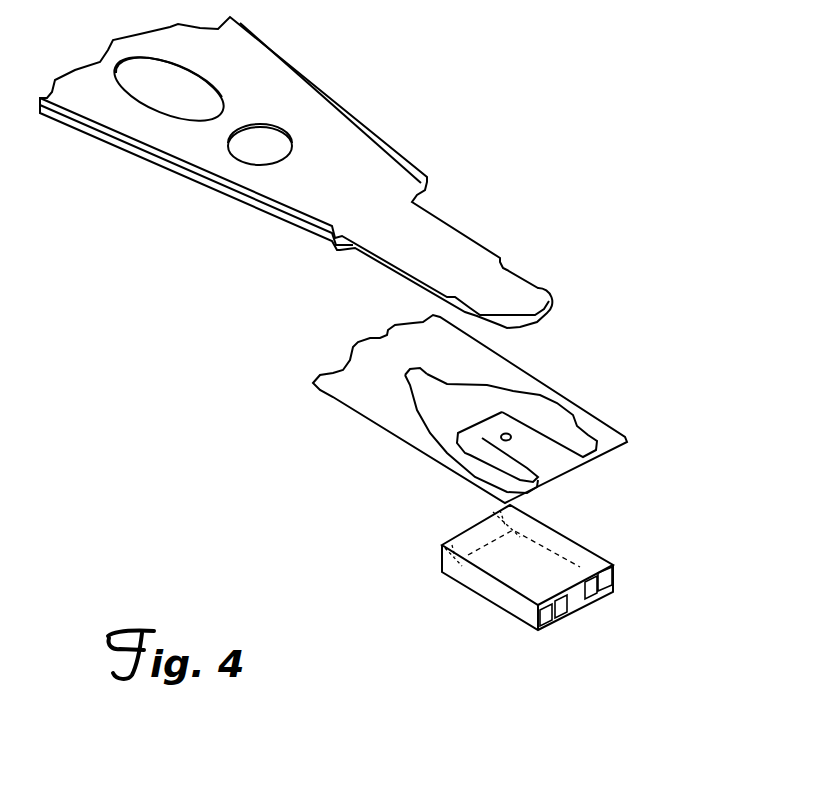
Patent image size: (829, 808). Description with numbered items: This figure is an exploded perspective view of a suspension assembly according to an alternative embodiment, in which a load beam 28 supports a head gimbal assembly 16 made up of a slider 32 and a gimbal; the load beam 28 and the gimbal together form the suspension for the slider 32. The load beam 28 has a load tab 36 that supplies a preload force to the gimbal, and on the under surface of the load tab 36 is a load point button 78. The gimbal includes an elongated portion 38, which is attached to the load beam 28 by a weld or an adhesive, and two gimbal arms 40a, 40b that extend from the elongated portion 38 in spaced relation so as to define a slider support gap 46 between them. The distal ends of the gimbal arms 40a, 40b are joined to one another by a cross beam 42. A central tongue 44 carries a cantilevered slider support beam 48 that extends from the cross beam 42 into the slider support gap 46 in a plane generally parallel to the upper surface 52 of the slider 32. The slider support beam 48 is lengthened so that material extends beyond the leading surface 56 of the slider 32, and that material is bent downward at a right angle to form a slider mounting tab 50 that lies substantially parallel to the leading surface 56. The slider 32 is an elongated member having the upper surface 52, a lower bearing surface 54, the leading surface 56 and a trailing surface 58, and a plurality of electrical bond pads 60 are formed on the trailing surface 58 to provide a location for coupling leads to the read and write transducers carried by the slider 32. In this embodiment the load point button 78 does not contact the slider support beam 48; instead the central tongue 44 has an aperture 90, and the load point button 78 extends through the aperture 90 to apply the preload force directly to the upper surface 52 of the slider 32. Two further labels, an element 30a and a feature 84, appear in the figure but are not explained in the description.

The load beam 28 is at (323, 83).
The load tab 36 is at (382, 216).
The tongue portion 30a is at (498, 242).
The load point button 78 is at (345, 396).
The elongated portion 38 is at (442, 361).
The cross beam 42 is at (625, 438).
The head gimbal assembly 16 is at (680, 377).
The gimbal arm 40a is at (563, 403).
The gimbal arm 40b is at (442, 458).
The central tongue 44 is at (518, 415).
The slider support gap 46 is at (451, 393).
The slider support beam 48 is at (541, 466).
The finger root 84 is at (493, 373).
The aperture 90 is at (475, 440).
The slider mounting tab 50 is at (458, 447).
The slider 32 is at (583, 540).
The leading surface 56 is at (442, 556).
The upper surface 52 is at (597, 552).
The trailing surface 58 is at (612, 587).
The lower bearing surface 54 is at (524, 623).
The electrical bond pads 60 is at (544, 620).